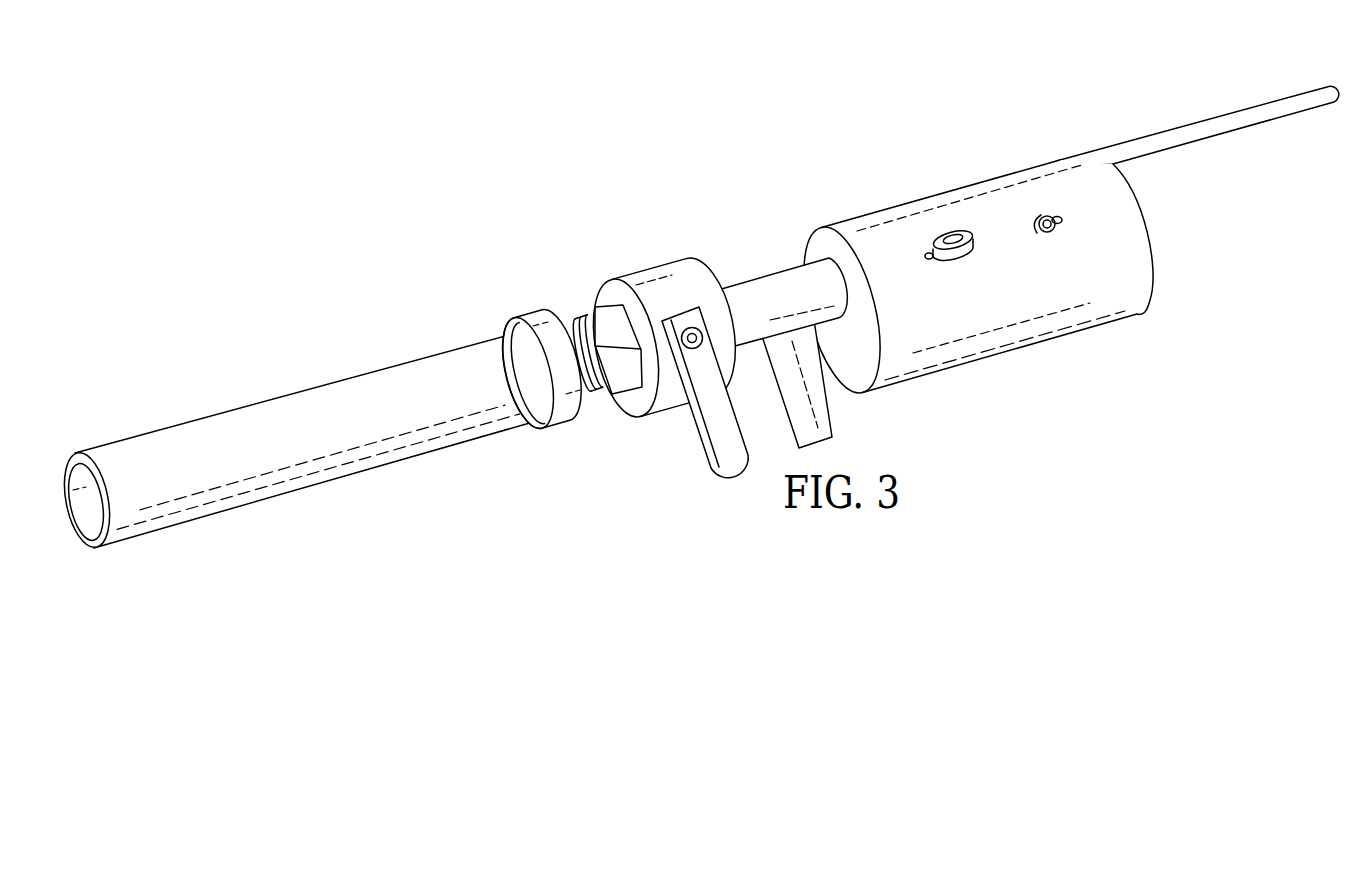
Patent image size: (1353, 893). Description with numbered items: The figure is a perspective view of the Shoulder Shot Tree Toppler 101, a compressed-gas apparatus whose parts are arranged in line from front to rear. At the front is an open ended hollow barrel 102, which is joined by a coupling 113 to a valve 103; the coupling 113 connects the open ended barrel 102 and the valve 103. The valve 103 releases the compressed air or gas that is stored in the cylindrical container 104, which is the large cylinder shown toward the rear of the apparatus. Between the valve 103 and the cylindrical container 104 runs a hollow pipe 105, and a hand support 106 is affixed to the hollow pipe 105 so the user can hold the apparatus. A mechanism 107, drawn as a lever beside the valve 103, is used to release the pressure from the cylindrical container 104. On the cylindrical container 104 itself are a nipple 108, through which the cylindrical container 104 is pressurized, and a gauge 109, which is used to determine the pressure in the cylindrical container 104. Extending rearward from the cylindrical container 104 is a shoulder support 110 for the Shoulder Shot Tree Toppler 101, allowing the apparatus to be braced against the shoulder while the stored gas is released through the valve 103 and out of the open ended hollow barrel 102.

The Shoulder Shot Tree Toppler 101 is at (519, 121).
The open ended hollow barrel 102 is at (362, 373).
The valve 103 is at (652, 268).
The cylindrical container 104 is at (908, 204).
The hollow pipe 105 is at (772, 274).
The hand support 106 is at (832, 420).
The mechanism 107 is at (706, 449).
The nipple 108 is at (1047, 237).
The gauge 109 is at (957, 262).
The shoulder support 110 is at (1189, 122).
The coupling 113 is at (530, 314).